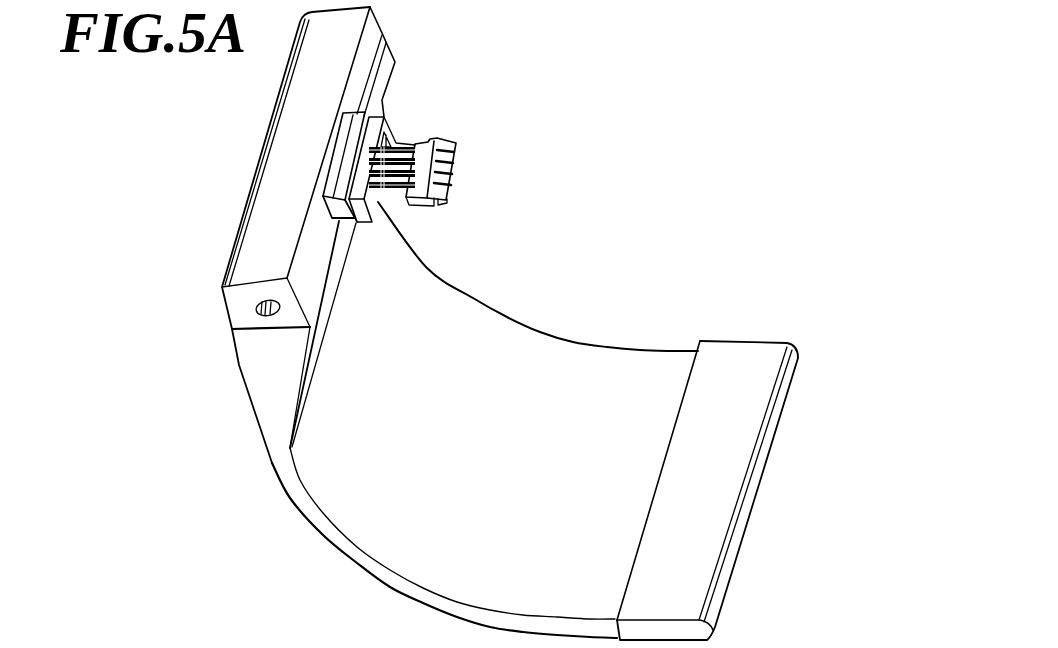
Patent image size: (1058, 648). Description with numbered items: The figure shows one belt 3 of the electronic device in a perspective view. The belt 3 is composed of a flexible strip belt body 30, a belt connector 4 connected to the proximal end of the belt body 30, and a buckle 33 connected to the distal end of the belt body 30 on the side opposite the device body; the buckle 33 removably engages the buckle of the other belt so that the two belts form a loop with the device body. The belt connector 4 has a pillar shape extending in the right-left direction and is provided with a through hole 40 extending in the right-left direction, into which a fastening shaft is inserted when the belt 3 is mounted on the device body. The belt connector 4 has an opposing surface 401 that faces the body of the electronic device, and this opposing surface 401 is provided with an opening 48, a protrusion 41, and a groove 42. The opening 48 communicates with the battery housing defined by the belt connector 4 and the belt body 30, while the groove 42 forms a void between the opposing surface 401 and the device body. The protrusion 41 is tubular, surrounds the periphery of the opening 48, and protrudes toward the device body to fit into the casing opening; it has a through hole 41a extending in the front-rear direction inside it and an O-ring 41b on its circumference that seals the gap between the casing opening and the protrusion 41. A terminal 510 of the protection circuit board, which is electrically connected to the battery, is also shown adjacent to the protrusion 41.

The belt 3 is at (640, 97).
The belt connector 4 is at (292, 115).
The opposing surface 401 is at (313, 248).
The through hole 40 is at (257, 310).
The groove 42 is at (380, 53).
The protrusion 41 is at (470, 88).
The through hole 41a is at (388, 141).
The opening 48 is at (386, 139).
The O-ring 41b is at (358, 222).
The terminal 510 is at (447, 203).
The belt body 30 is at (250, 393).
The buckle 33 is at (710, 593).